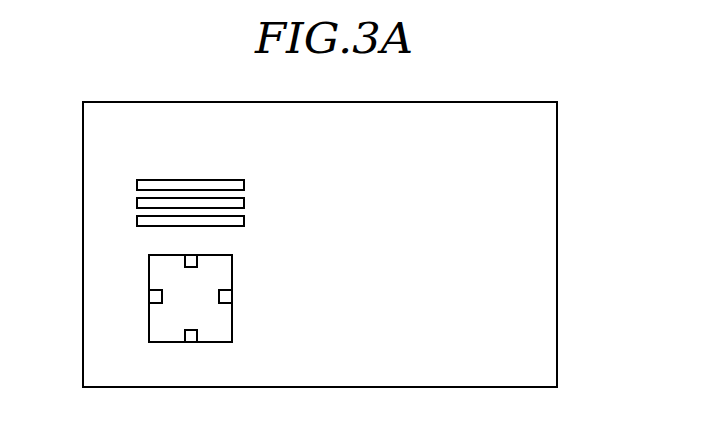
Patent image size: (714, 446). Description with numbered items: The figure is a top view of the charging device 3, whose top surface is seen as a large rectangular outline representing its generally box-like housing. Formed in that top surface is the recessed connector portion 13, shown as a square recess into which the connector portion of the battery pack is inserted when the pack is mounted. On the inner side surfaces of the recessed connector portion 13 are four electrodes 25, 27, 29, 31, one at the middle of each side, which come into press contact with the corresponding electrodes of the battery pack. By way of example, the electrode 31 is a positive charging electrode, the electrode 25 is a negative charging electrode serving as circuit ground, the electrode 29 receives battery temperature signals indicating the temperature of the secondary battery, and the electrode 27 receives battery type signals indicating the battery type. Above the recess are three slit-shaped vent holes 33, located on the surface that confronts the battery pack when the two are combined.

The charging device 3 is at (567, 241).
The recessed connector portion 13 is at (220, 333).
The electrode 25 is at (191, 343).
The electrode 27 is at (149, 297).
The electrode 29 is at (192, 257).
The electrode 31 is at (232, 296).
The vent holes 33 is at (137, 221).